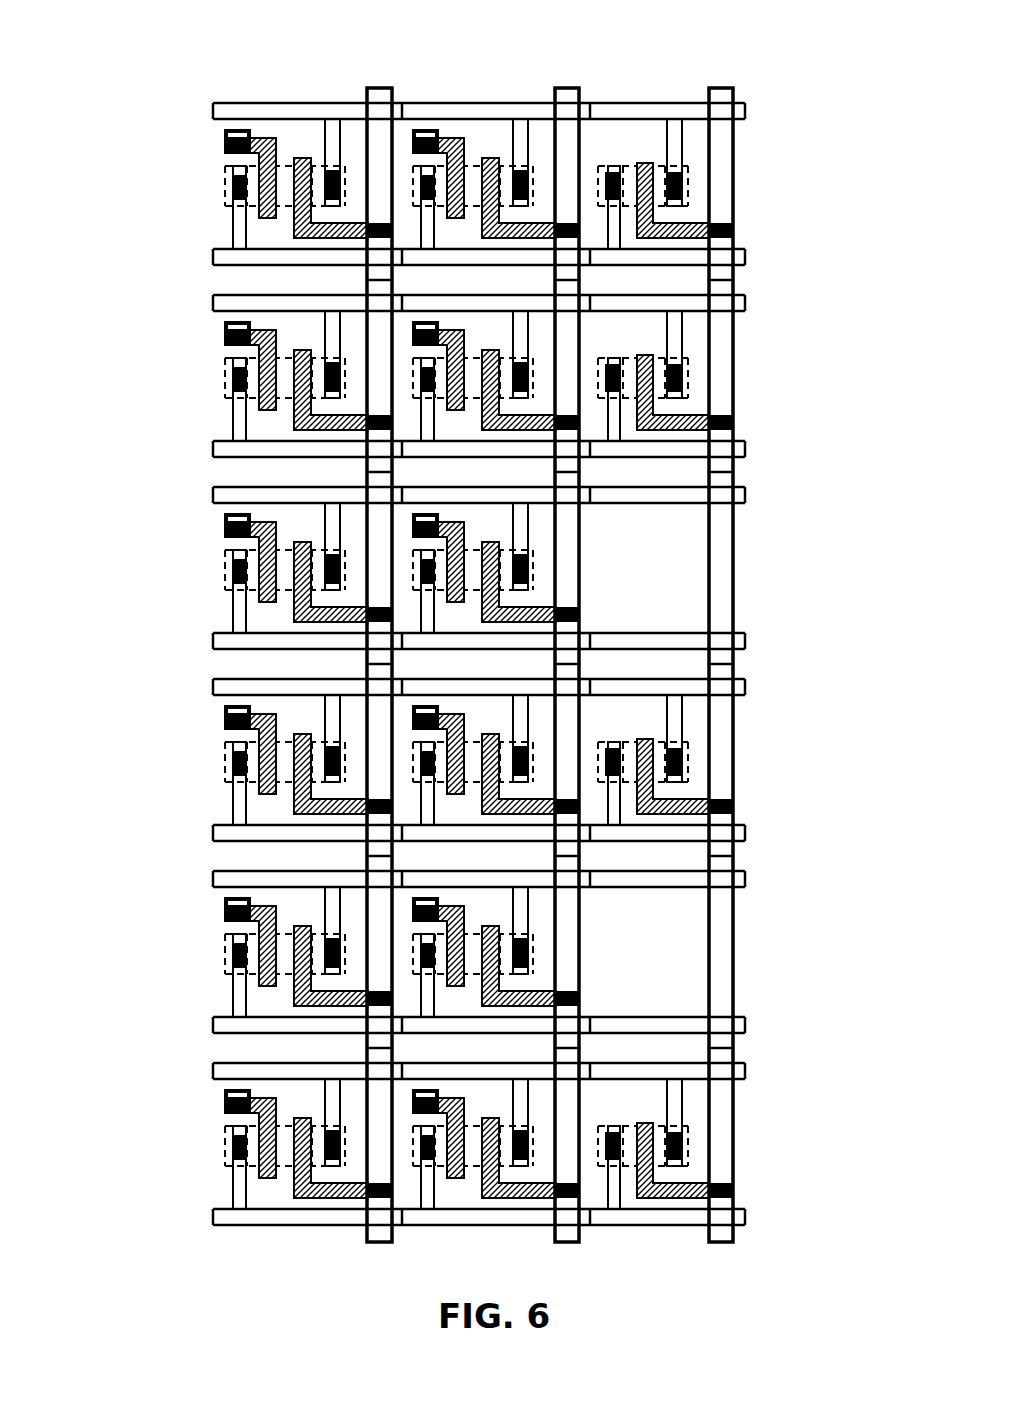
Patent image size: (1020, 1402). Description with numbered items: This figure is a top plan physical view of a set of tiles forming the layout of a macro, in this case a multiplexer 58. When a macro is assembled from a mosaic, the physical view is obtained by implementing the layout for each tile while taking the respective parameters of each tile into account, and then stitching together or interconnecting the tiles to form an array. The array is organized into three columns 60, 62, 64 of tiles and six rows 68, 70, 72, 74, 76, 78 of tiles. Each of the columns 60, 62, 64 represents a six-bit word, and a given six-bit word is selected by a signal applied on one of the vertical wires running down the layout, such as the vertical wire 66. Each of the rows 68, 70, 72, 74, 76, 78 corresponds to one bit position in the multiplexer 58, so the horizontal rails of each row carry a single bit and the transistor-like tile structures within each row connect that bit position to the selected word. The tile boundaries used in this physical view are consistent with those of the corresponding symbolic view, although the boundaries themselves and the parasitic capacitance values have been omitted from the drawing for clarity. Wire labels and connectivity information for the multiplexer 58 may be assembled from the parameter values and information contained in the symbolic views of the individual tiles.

The multiplexer 58 is at (848, 116).
The column of tiles 60 is at (273, 48).
The column of tiles 62 is at (488, 52).
The column of tiles 64 is at (699, 60).
The vertical wire 66 is at (563, 88).
The row 68 is at (157, 196).
The row 70 is at (160, 364).
The row 72 is at (162, 584).
The row 74 is at (157, 771).
The row 76 is at (155, 976).
The row 78 is at (159, 1152).